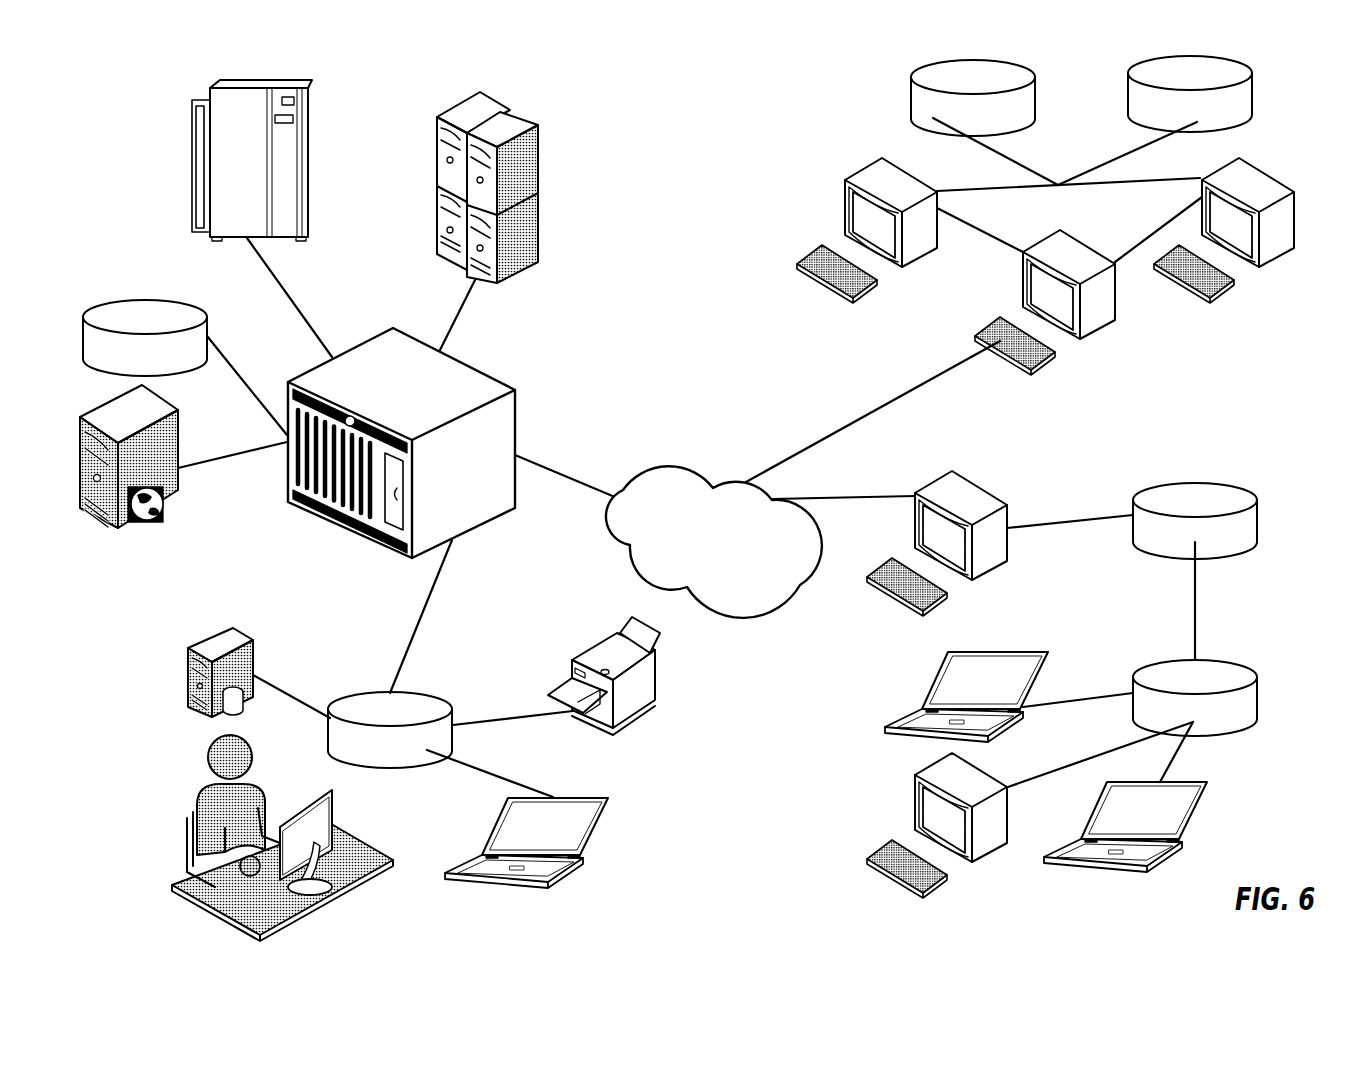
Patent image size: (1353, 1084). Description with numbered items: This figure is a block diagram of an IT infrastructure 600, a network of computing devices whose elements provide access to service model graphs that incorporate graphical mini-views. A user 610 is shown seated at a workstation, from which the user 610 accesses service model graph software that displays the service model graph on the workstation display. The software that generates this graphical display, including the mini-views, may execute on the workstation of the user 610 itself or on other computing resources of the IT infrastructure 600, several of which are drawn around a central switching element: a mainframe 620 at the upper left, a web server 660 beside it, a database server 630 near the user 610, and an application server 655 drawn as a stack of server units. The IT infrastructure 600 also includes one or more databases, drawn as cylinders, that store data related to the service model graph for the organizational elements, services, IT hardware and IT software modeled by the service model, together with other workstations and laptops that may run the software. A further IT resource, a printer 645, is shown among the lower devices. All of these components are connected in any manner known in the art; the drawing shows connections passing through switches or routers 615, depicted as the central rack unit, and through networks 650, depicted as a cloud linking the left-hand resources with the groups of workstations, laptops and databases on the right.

The IT infrastructure 600 is at (705, 115).
The user 610 is at (190, 823).
The switches or routers 615 is at (515, 390).
The mainframe 620 is at (310, 160).
The database server 630 is at (228, 627).
The printer 645 is at (630, 727).
The networks 650 is at (640, 468).
The application server 655 is at (538, 193).
The web server 660 is at (178, 492).